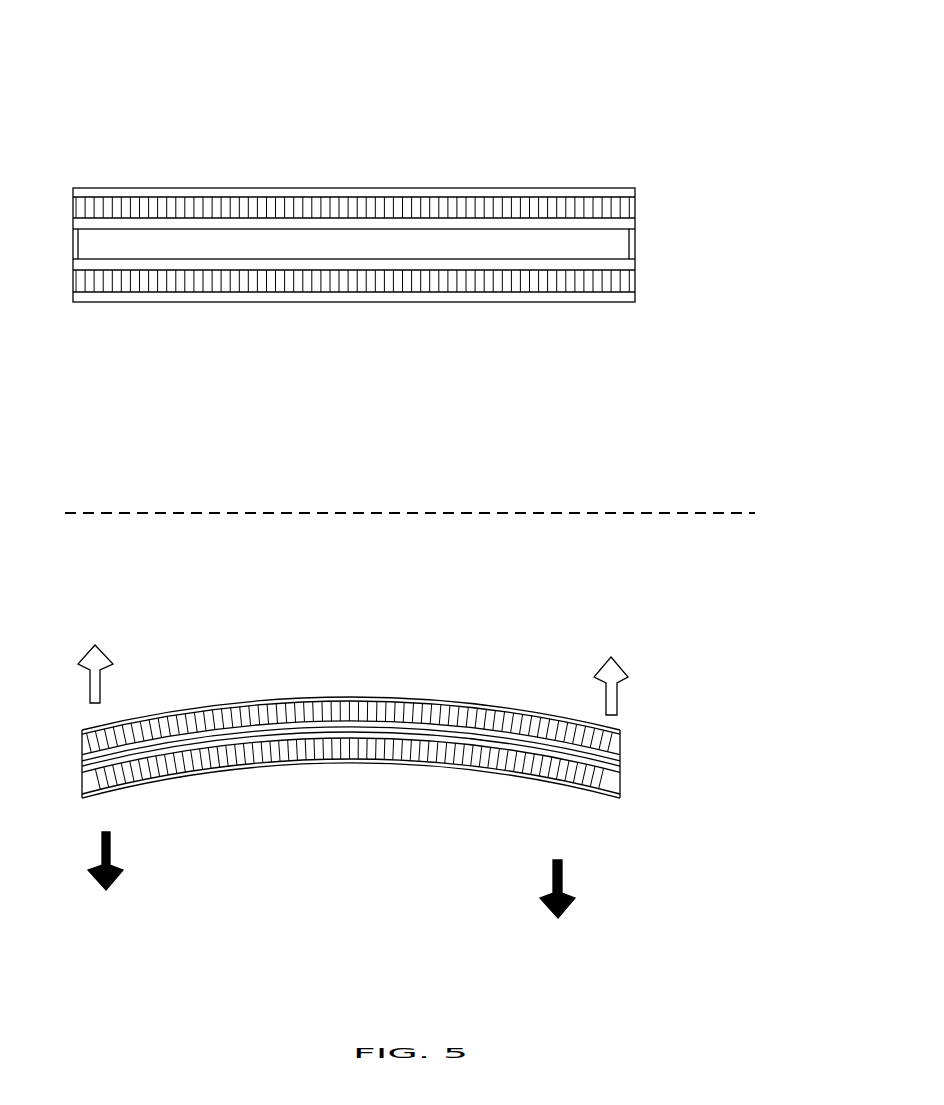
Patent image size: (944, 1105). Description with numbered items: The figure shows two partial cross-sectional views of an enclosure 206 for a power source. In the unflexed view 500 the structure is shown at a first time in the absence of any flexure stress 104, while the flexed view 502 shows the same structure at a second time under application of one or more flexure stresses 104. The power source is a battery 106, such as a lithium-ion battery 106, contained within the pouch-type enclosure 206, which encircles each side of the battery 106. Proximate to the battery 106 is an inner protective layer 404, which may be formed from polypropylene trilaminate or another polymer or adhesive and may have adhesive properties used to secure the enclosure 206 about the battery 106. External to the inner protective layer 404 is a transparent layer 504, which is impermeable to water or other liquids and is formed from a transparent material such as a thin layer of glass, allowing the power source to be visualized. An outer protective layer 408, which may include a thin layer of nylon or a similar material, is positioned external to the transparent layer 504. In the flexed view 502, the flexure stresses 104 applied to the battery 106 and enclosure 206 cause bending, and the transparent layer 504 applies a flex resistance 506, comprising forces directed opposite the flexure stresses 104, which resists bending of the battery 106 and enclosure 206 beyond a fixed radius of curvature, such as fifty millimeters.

The enclosure 206 is at (228, 163).
The unflexed view 500 is at (580, 57).
The flexed view 502 is at (602, 573).
The outer protective layer 408 is at (393, 188).
The transparent layer 504 is at (567, 208).
The inner protective layer 404 is at (621, 769).
The battery 106 is at (395, 252).
The flex resistance 506 is at (670, 670).
The flexure stress 104 is at (110, 850).